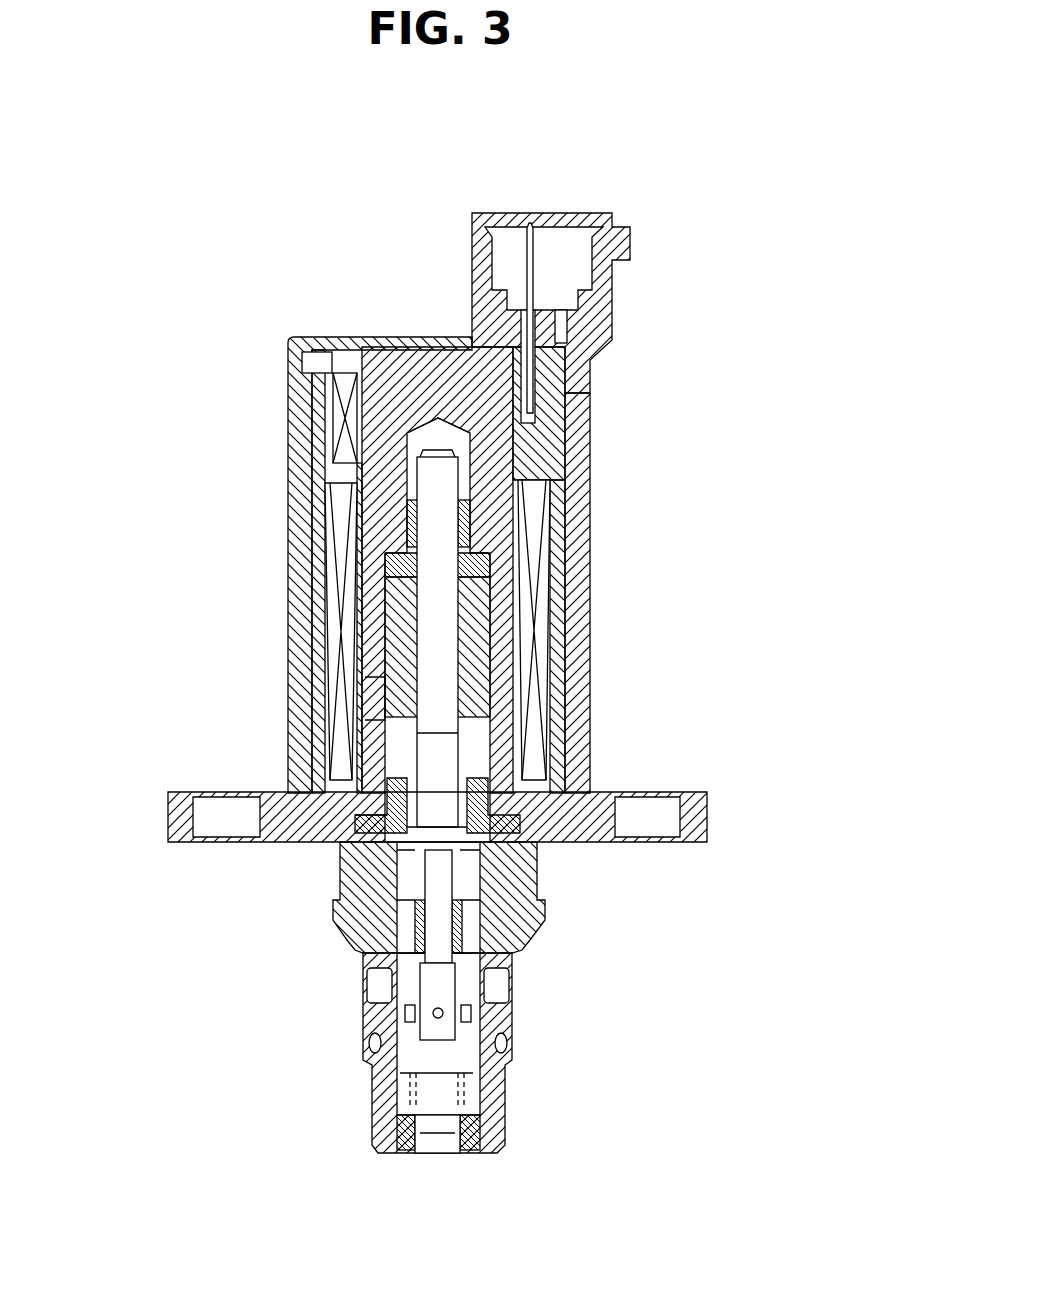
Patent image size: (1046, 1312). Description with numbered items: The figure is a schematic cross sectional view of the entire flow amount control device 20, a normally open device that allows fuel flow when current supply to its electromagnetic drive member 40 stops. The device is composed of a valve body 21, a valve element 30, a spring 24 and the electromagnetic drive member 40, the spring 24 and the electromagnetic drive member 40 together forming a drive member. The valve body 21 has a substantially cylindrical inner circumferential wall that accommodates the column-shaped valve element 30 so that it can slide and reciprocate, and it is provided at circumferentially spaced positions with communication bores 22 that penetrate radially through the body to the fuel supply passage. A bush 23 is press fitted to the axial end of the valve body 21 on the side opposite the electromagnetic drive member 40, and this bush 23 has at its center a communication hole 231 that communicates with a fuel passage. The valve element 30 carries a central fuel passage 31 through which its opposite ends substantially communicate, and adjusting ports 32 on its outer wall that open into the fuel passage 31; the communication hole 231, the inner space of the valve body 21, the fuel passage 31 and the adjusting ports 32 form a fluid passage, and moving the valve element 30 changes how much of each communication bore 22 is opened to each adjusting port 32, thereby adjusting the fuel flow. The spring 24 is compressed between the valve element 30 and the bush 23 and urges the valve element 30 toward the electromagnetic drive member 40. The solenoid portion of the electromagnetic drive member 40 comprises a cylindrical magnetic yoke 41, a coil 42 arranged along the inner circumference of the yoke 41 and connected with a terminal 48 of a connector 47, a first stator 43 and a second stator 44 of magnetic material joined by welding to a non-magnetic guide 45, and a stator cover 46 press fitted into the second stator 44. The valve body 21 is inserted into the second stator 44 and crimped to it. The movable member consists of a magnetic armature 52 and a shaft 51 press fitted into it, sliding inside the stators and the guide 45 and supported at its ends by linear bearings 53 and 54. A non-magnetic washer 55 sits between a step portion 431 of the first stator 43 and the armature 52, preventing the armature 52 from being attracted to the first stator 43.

The flow amount control device 20 is at (662, 262).
The valve body 21 is at (368, 870).
The communication bores 22 is at (378, 985).
The bush 23 is at (403, 1117).
The communication hole 231 is at (440, 1153).
The spring 24 is at (467, 1093).
The valve element 30 is at (560, 900).
The fuel passage 31 is at (440, 945).
The adjusting ports 32 is at (407, 1013).
The electromagnetic drive member 40 is at (272, 395).
The yoke 41 is at (592, 437).
The coil 42 is at (330, 482).
The first stator 43 is at (400, 355).
The step portion 431 is at (490, 570).
The second stator 44 is at (348, 773).
The guide 45 is at (372, 694).
The stator cover 46 is at (353, 820).
The connector 47 is at (478, 213).
The terminal 48 is at (531, 226).
The shaft 51 is at (432, 628).
The armature 52 is at (478, 604).
The linear bearing 53 is at (405, 527).
The linear bearing 54 is at (465, 775).
The washer 55 is at (388, 571).